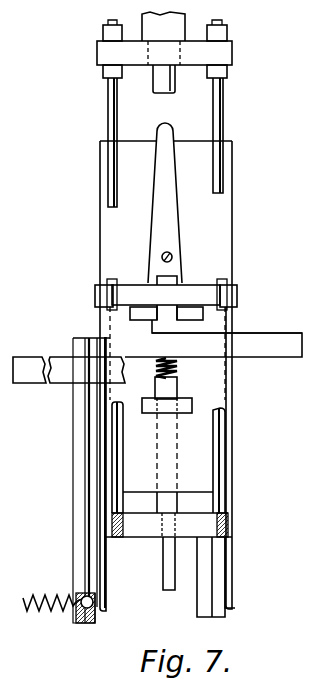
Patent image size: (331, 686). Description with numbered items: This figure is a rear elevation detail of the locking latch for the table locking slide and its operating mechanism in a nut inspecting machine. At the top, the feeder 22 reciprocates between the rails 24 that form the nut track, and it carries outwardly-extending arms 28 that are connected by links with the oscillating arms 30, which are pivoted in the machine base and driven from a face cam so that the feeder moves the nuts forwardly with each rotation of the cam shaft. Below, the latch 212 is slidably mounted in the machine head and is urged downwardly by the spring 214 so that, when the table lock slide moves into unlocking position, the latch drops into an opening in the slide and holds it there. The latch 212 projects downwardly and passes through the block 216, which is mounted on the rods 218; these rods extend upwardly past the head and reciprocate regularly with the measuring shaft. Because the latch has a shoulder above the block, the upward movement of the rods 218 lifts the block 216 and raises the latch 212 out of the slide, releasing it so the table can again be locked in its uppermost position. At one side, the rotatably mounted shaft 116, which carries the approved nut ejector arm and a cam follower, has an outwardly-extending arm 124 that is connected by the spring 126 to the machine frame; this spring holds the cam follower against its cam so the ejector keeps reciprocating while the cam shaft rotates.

The feeder 22 is at (166, 321).
The rails 24 is at (157, 363).
The outwardly-extending arms 28 is at (130, 292).
The oscillating arms 30 is at (107, 408).
The rotatably mounted shaft 116 is at (88, 500).
The outwardly-extending arm 124 is at (76, 614).
The spring 126 is at (45, 590).
The latch 212 is at (172, 395).
The spring 214 is at (175, 366).
The block 216 is at (152, 538).
The rods 218 is at (117, 482).